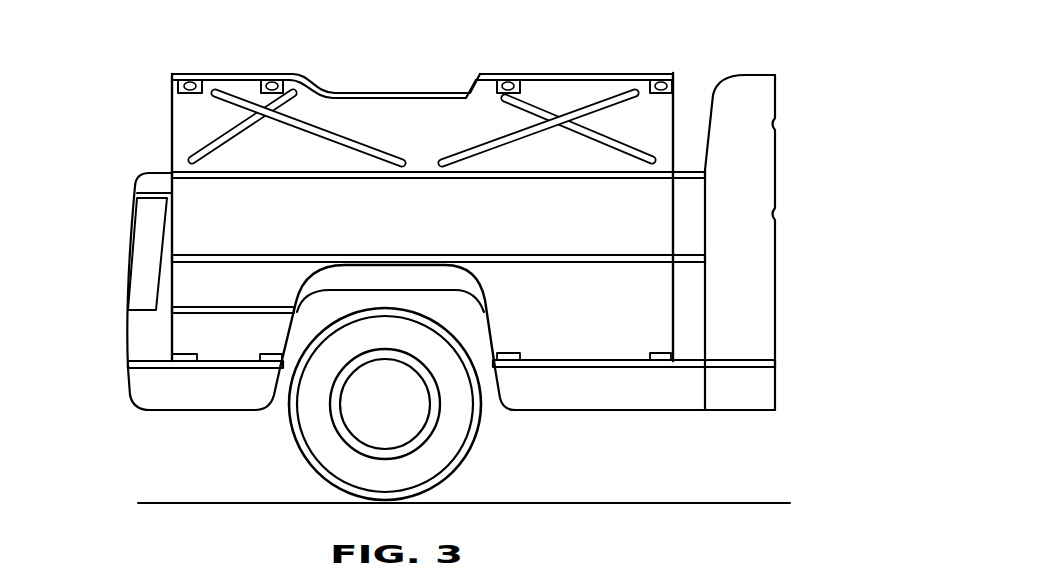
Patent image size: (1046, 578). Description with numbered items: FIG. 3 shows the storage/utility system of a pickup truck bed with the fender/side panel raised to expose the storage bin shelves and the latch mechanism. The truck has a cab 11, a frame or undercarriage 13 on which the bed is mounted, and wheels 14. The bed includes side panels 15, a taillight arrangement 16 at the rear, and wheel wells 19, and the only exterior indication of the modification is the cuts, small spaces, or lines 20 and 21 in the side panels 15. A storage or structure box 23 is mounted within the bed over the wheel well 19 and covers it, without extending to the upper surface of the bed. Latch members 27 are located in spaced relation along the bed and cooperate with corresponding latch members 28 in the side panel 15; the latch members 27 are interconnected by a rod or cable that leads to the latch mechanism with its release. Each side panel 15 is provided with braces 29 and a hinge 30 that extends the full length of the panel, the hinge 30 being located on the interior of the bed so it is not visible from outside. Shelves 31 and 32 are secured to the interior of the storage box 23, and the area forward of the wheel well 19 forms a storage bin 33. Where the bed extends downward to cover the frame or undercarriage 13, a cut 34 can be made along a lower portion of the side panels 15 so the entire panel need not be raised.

The cab 11 is at (643, 229).
The frame or undercarriage 13 is at (398, 413).
The wheels 14 is at (367, 404).
The side panels 15 is at (443, 133).
The taillight arrangement 16 is at (125, 270).
The wheel wells 19 is at (385, 278).
The cut, small space, or line 20 is at (645, 217).
The cut, small space, or line 21 is at (208, 217).
The storage or structure box 23 is at (587, 221).
The latch members 27 is at (421, 328).
The latch members 28 is at (426, 58).
The braces 29 is at (422, 104).
The hinge 30 is at (438, 195).
The shelf 31 is at (233, 293).
The shelf 32 is at (438, 240).
The storage bin 33 is at (555, 392).
The cut 34 is at (451, 403).